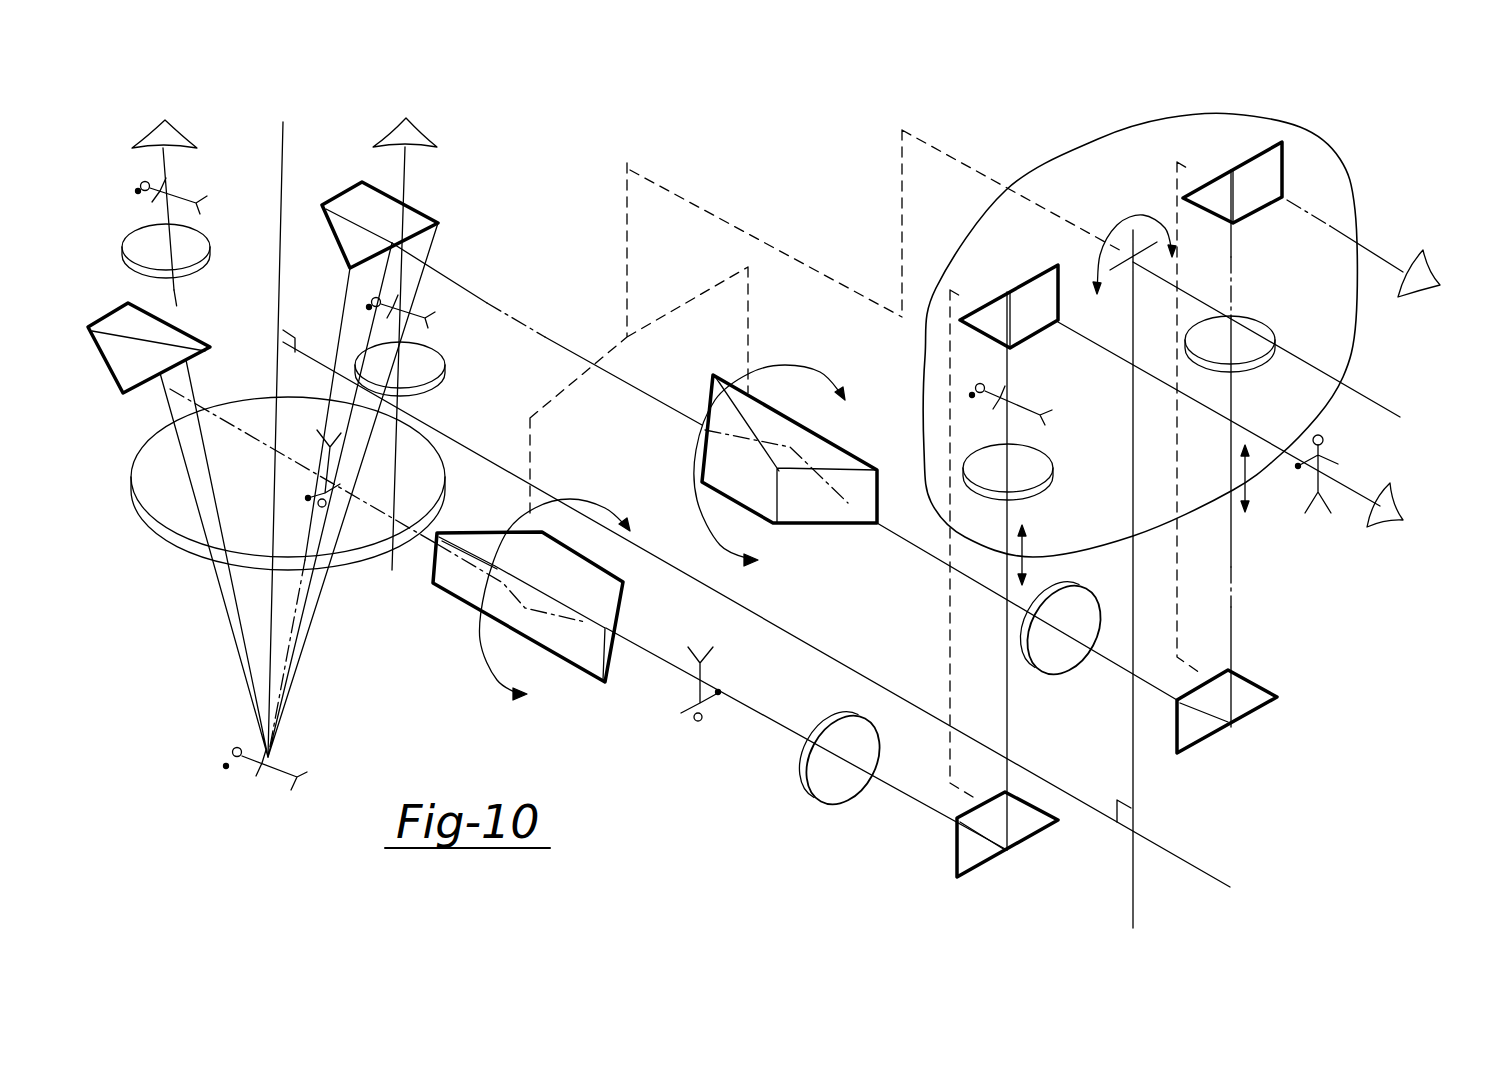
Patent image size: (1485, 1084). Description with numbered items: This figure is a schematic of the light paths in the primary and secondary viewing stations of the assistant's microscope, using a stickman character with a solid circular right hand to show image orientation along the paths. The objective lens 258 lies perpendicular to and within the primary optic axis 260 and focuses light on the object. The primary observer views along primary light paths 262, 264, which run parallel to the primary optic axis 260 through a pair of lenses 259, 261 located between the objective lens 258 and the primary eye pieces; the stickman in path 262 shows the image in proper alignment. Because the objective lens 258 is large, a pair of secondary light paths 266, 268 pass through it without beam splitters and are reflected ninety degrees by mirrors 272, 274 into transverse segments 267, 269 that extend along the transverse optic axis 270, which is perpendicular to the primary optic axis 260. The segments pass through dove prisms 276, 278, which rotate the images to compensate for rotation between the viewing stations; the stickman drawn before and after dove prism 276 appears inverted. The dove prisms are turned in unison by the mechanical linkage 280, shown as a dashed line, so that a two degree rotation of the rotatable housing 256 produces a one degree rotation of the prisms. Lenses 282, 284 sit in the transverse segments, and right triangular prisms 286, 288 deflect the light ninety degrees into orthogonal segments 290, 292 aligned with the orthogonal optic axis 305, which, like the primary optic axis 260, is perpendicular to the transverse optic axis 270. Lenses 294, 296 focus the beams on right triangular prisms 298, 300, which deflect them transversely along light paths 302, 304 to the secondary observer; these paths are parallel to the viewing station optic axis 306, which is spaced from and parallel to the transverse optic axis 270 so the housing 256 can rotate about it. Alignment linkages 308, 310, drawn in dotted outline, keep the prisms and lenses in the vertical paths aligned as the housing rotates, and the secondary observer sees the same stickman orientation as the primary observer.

The rotatable housing 256 is at (1316, 143).
The objective lens 258 is at (175, 548).
The lens system 259 is at (124, 244).
The primary optic axis 260 is at (287, 147).
The lens system 261 is at (470, 375).
The primary light path 262 is at (173, 167).
The primary light path 264 is at (408, 172).
The secondary light path 266 is at (240, 627).
The secondary light path transverse segment 267 is at (757, 712).
The secondary light path 268 is at (358, 352).
The secondary light path transverse segment 269 is at (907, 543).
The transverse optic axis 270 is at (1207, 870).
The mirror 272 is at (170, 339).
The mirror 274 is at (430, 212).
The dove prism 276 is at (565, 660).
The dove prism 278 is at (765, 505).
The mechanical linkage 280 is at (653, 179).
The lens 282 is at (838, 800).
The lens 284 is at (1044, 672).
The right triangular prism 286 is at (977, 868).
The right triangular prism 288 is at (1195, 731).
The orthogonal light path segment 290 is at (1007, 677).
The orthogonal light path segment 292 is at (1232, 553).
The lens 294 is at (1022, 488).
The lens 296 is at (1267, 372).
The right triangular prism 298 is at (1025, 332).
The right triangular prism 300 is at (1243, 207).
The light path 302 is at (1352, 482).
The light path 304 is at (1368, 244).
The orthogonal optic axis 305 is at (1135, 895).
The viewing station optic axis 306 is at (1367, 393).
The mechanical alignment linkage 308 is at (948, 620).
The mechanical alignment linkage 310 is at (1173, 600).